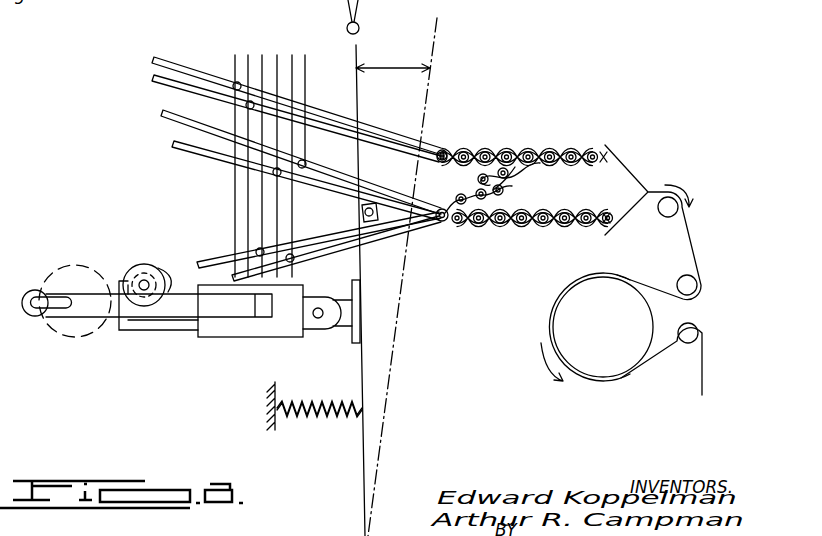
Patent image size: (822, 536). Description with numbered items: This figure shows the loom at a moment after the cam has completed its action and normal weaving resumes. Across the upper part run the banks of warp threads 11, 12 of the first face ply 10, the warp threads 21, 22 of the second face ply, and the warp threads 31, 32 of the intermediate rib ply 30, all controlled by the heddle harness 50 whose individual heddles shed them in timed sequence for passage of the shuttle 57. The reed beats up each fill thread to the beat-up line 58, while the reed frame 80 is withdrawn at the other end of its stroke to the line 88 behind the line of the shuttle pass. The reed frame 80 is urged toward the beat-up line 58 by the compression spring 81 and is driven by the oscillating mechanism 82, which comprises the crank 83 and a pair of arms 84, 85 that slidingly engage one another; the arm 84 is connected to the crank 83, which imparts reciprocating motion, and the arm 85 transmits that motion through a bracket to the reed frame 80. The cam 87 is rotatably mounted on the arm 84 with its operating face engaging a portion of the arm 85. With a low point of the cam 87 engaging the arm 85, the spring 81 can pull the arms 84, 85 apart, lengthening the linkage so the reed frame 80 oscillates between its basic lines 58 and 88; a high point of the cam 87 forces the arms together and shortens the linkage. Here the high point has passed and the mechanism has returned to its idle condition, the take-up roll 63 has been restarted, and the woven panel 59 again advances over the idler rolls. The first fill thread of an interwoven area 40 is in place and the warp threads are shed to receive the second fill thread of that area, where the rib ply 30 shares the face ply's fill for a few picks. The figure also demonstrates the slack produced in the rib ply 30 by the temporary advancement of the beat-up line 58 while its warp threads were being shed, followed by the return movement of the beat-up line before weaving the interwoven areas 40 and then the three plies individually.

The first face ply 10 is at (481, 147).
The warp threads 11 is at (183, 47).
The warp threads 12 is at (153, 79).
The warp threads 21 is at (298, 252).
The warp threads 22 is at (162, 114).
The rib ply 30 is at (529, 187).
The warp threads 31 is at (210, 262).
The warp threads 32 is at (182, 152).
The interwoven area 40 is at (441, 223).
The heddle harness 50 is at (312, 56).
The shuttle 57 is at (371, 232).
The beat-up line 58 is at (428, 100).
The woven panel 59 is at (692, 241).
The take-up roll 63 is at (615, 365).
The reed frame 80 is at (360, 364).
The compression spring 81 is at (314, 399).
The oscillating mechanism 82 is at (99, 353).
The crank 83 is at (45, 312).
The arm 84 is at (176, 311).
The arm 85 is at (243, 330).
The cam 87 is at (141, 266).
The withdrawn line 88 is at (355, 69).